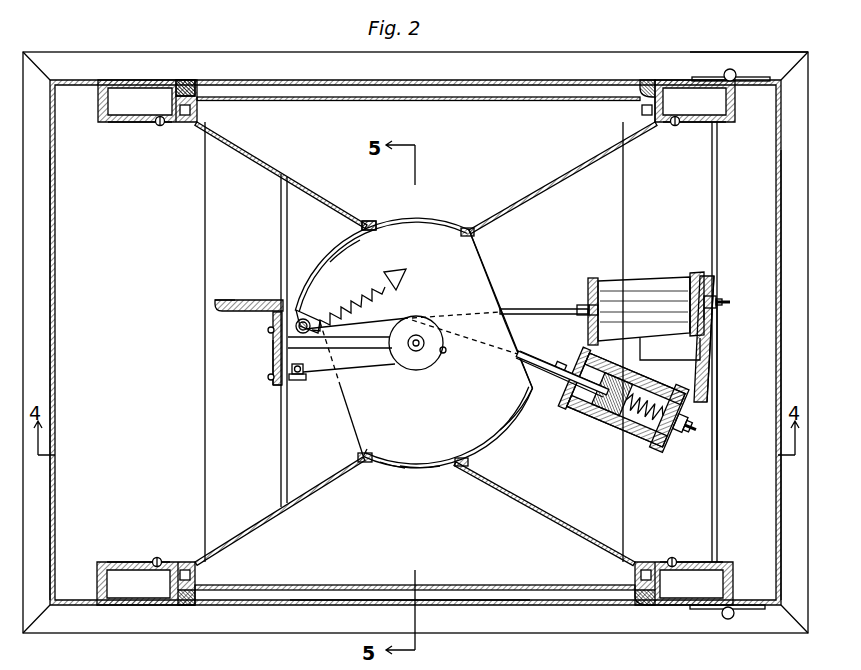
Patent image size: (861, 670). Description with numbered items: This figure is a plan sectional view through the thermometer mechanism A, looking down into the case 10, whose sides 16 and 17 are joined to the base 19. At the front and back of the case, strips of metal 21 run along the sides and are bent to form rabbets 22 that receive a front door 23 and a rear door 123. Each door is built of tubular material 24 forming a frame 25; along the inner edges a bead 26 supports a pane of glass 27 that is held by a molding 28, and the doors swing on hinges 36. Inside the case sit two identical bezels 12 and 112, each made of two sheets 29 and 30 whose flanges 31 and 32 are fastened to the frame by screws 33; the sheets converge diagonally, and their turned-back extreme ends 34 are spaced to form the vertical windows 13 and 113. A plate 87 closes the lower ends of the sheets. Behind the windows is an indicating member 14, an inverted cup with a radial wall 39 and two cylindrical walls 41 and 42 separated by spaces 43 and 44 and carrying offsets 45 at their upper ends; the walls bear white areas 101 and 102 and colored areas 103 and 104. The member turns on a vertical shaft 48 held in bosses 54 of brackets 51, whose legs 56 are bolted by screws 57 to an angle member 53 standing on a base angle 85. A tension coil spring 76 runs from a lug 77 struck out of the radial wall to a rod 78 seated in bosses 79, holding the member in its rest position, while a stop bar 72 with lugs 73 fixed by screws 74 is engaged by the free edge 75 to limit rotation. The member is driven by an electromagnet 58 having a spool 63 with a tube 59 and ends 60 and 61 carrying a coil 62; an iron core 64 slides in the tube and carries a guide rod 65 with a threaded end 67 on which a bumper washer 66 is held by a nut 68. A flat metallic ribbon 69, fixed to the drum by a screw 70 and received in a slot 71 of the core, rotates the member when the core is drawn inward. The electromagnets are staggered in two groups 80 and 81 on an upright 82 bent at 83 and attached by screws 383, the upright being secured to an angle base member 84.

The case 10 is at (565, 52).
The mechanism A is at (700, 52).
The strips of metal 21 is at (60, 92).
The side 16 is at (57, 275).
The side 17 is at (779, 200).
The base 19 is at (140, 372).
The base angle 85 is at (228, 432).
The angle base member 84 is at (702, 185).
The sheet of metal 29 is at (284, 172).
The tubular material 24 is at (130, 80).
The rabbet 22 is at (115, 122).
The door 23 is at (182, 605).
The flange 31 is at (185, 122).
The flange 32 is at (652, 122).
The molding 28 is at (190, 85).
The door 123 is at (180, 82).
The bead 26 is at (192, 110).
The pane of glass 27 is at (486, 97).
The screws 33 is at (160, 126).
The frame 25 is at (700, 609).
The hinges 36 is at (733, 70).
The bezel 112 is at (255, 152).
The sheet of metal 30 is at (560, 178).
The bezel 12 is at (265, 522).
The offsets 45 is at (452, 228).
The white area 101 is at (462, 230).
The circumferential wall 41 is at (352, 252).
The indicating member 14 is at (485, 258).
The space 44 is at (495, 288).
The radial wall 39 is at (495, 305).
The space 43 is at (355, 432).
The free edge 75 is at (366, 455).
The circumferential wall 42 is at (425, 468).
The white area 102 is at (405, 470).
The colored area 103 is at (518, 424).
The window 13 is at (465, 466).
The extreme ends 34 is at (365, 463).
The opening 113 is at (378, 222).
The boss 54 is at (435, 365).
The shaft 48 is at (416, 352).
The screw 70 is at (448, 352).
The bosses 79 is at (300, 318).
The rod 78 is at (314, 315).
The lugs 73 is at (318, 372).
The stop bar 72 is at (298, 380).
The tension coil spring 76 is at (340, 312).
The lug 77 is at (394, 272).
The colored area 104 is at (318, 300).
The angle member 53 is at (232, 297).
The legs 56 is at (273, 340).
The brackets 51 is at (273, 356).
The bolts or screws 57 is at (268, 329).
The screws 74 is at (277, 385).
The flat metallic ribbon 69 is at (560, 372).
The slot 71 is at (578, 306).
The spool 63 is at (582, 305).
The iron core 64 is at (592, 316).
The electromagnet 58 is at (610, 281).
The group 80 is at (648, 283).
The end 61 is at (693, 285).
The coil 62 is at (638, 300).
The screws 383 is at (712, 290).
The upright 82 is at (708, 350).
The bend 83 is at (718, 368).
The bumper washer 66 is at (716, 298).
The threaded end 67 is at (728, 300).
The guide rod 65 is at (724, 302).
The nut 68 is at (712, 308).
The end 60 is at (590, 278).
The tube 59 is at (610, 410).
The group 81 is at (628, 432).
The plate 87 is at (372, 588).